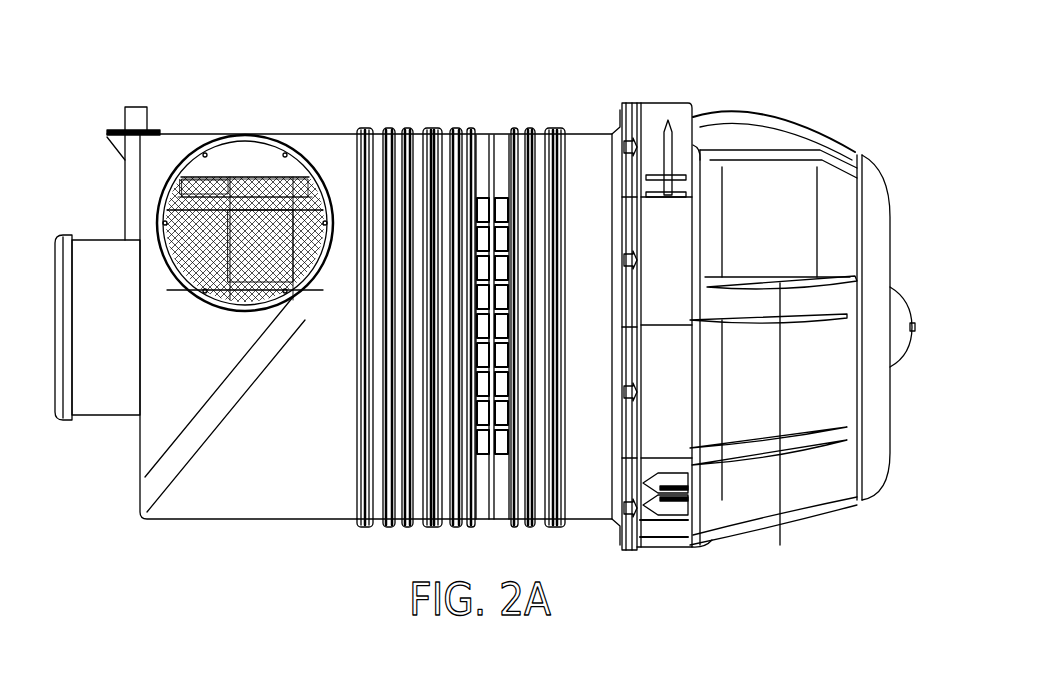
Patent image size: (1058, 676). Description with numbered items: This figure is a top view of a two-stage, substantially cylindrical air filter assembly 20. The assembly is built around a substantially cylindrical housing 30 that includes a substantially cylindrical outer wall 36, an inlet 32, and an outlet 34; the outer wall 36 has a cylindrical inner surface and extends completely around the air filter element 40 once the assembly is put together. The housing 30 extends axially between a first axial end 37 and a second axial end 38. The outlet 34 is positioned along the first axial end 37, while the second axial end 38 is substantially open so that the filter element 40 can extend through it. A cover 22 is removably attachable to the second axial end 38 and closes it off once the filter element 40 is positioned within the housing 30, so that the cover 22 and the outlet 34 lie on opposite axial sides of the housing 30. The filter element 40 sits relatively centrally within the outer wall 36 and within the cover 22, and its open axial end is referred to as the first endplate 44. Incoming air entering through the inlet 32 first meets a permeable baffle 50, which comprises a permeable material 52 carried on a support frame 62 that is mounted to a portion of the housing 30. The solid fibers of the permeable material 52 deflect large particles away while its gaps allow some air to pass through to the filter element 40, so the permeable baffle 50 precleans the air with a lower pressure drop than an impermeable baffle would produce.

The air filter assembly 20 is at (748, 84).
The cover 22 is at (888, 176).
The housing 30 is at (588, 131).
The inlet 32 is at (310, 165).
The outlet 34 is at (48, 402).
The outer wall 36 is at (284, 521).
The first axial end 37 is at (54, 356).
The second axial end 38 is at (645, 525).
The air filter element 40 is at (281, 220).
The first endplate 44 is at (184, 186).
The permeable baffle 50 is at (253, 170).
The permeable material 52 is at (236, 223).
The support frame 62 is at (238, 195).